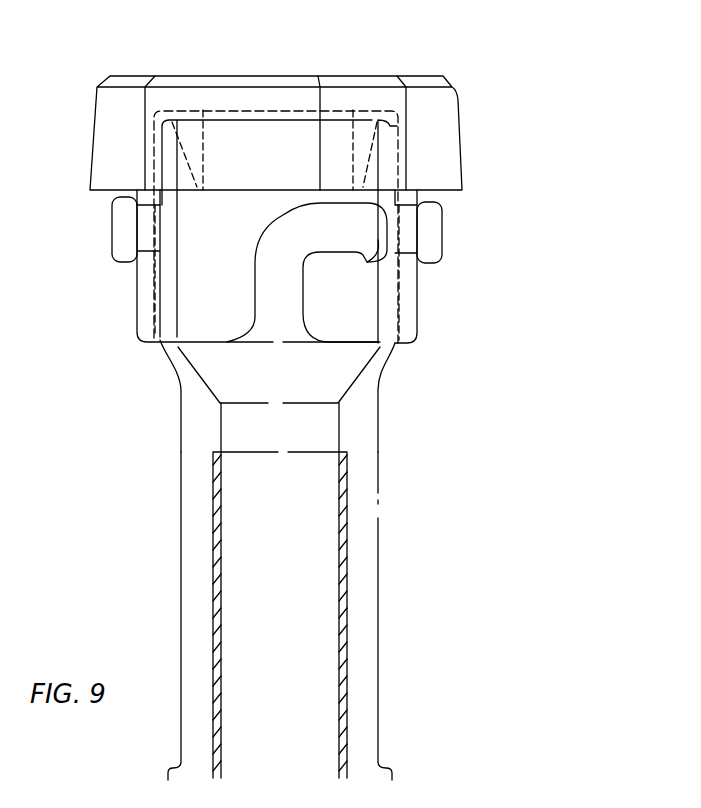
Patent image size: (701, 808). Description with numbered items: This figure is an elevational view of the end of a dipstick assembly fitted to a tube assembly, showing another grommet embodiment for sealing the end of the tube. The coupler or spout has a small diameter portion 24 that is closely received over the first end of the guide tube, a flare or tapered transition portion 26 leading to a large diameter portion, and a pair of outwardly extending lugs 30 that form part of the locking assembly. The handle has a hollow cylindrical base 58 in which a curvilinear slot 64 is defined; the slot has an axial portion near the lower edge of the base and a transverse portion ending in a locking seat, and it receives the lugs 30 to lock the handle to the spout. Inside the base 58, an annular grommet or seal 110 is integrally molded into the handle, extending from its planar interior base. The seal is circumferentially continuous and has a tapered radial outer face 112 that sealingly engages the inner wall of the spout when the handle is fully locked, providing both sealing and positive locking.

The small diameter portion 24 is at (373, 632).
The flare or tapered transition portion 26 is at (380, 363).
The outwardly extending lugs 30 is at (117, 238).
The hollow cylindrical base 58 is at (452, 168).
The curvilinear slot 64 is at (255, 267).
The grommet or seal 110 is at (193, 122).
The tapered radial outer face 112 is at (375, 155).